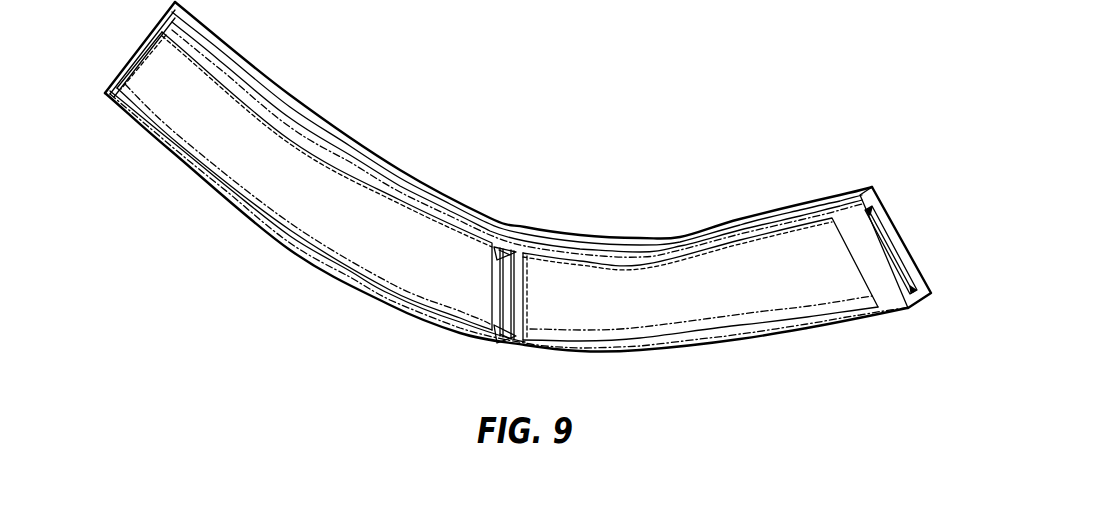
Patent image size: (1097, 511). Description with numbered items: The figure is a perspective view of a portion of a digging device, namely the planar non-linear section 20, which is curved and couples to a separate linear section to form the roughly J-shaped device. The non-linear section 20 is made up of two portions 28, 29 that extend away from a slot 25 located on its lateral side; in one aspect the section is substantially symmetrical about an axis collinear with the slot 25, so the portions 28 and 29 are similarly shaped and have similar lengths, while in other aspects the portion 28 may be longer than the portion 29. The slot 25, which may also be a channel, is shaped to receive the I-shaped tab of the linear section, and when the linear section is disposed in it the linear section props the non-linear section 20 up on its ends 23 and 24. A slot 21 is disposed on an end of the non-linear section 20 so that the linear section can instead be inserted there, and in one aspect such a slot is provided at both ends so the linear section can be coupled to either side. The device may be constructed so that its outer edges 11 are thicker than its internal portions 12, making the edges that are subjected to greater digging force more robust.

The outer edges 11 is at (337, 137).
The internal portions 12 is at (203, 85).
The planar non-linear section 20 is at (720, 277).
The slot 21 is at (899, 236).
The end 23 is at (113, 116).
The end 24 is at (877, 178).
The slot 25 is at (507, 330).
The portion 28 is at (657, 330).
The portion 29 is at (257, 167).